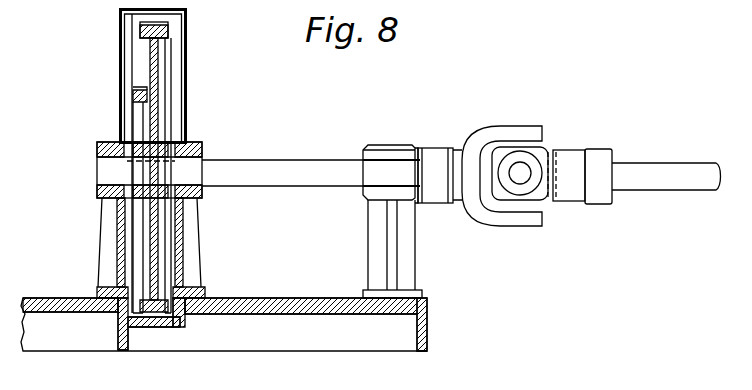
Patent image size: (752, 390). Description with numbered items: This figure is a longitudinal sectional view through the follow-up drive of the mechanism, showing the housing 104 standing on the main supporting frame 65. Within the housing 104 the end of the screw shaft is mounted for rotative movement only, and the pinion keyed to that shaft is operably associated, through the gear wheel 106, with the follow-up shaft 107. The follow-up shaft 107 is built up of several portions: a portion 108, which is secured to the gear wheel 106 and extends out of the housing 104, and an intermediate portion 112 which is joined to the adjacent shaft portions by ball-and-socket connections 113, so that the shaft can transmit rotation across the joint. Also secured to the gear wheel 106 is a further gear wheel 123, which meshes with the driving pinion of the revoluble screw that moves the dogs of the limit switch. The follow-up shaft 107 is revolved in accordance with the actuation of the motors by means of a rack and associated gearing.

The main supporting frame 65 is at (258, 302).
The housing 104 is at (183, 236).
The gear wheel 106 is at (166, 33).
The follow-up shaft 107 is at (228, 166).
The shaft portion 108 is at (292, 176).
The intermediate portion 112 is at (673, 180).
The ball-and-socket connection 113 is at (528, 182).
The gear wheel 123 is at (131, 83).